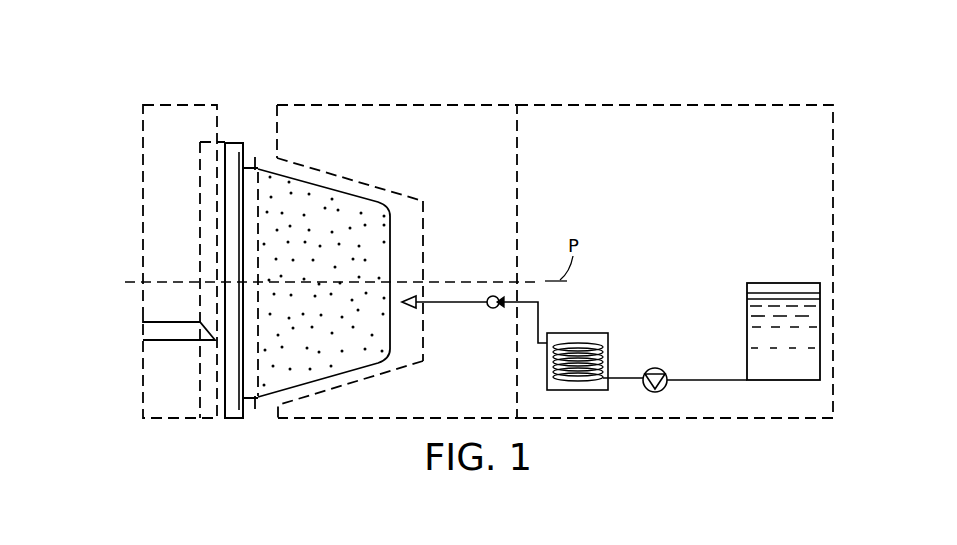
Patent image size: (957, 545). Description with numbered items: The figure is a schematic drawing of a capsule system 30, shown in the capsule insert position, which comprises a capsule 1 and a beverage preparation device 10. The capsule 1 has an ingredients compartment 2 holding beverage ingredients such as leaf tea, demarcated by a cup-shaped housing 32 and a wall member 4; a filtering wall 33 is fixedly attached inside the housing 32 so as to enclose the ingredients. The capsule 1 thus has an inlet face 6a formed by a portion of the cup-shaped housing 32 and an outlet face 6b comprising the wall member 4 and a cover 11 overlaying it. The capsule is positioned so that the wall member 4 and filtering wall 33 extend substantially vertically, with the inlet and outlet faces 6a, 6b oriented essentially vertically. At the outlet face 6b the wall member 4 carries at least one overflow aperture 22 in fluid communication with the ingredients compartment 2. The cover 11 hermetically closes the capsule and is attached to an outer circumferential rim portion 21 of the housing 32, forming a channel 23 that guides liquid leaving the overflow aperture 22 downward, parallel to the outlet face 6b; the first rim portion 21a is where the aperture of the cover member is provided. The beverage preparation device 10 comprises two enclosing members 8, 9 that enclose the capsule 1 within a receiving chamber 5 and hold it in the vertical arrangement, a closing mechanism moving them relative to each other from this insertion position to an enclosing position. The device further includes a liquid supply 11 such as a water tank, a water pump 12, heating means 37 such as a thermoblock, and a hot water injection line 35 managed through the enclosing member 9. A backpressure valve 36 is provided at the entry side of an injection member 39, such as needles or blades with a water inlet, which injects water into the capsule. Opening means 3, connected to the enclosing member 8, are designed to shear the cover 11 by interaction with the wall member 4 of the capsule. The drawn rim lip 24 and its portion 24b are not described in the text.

The capsule 1 is at (346, 191).
The ingredients compartment 2 is at (295, 178).
The opening means 3 is at (150, 338).
The wall member 4 is at (256, 152).
The receiving chamber 5 is at (412, 364).
The inlet face 6a is at (395, 237).
The outlet face 6b is at (243, 293).
The enclosing member 8 is at (197, 105).
The enclosing member 9 is at (392, 104).
The beverage preparation device 10 is at (777, 101).
The cover 11 is at (783, 283).
The water pump 12 is at (660, 368).
The outer circumferential rim portion 21 is at (234, 420).
The first rim portion 21a is at (263, 160).
The overflow aperture 22 is at (243, 186).
The channel 23 is at (243, 391).
The capsule rim 24 is at (258, 404).
The capsule rim lip 24b is at (252, 410).
The capsule system 30 is at (484, 61).
The cup-shaped housing 32 is at (352, 368).
The filtering wall 33 is at (262, 243).
The hot water injection line 35 is at (540, 303).
The backpressure valve 36 is at (491, 308).
The heating means 37 is at (608, 333).
The injection member 39 is at (410, 296).